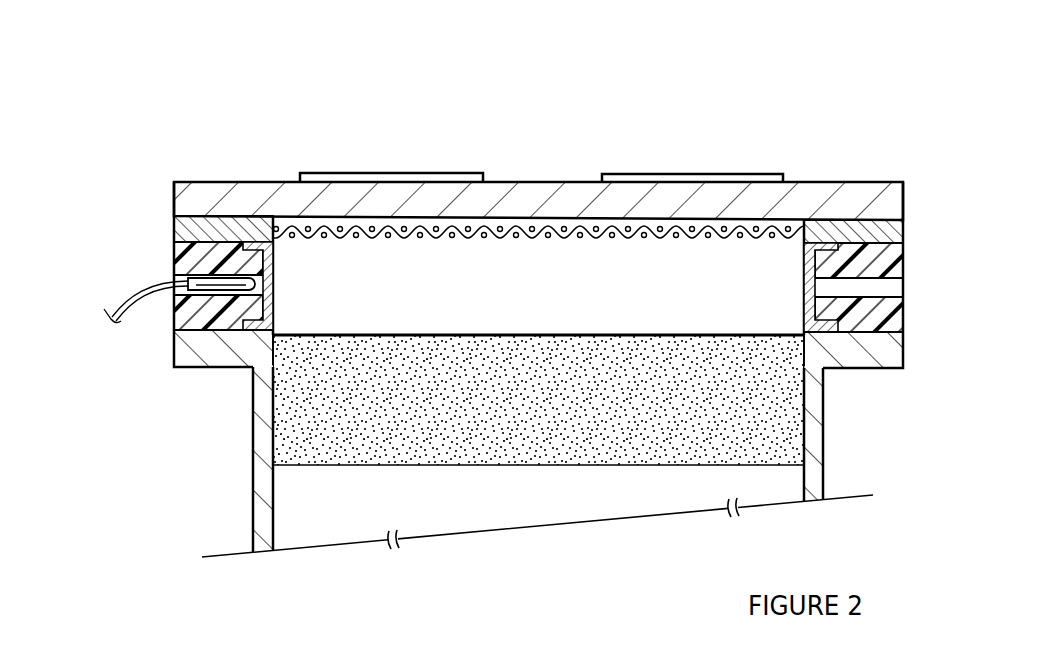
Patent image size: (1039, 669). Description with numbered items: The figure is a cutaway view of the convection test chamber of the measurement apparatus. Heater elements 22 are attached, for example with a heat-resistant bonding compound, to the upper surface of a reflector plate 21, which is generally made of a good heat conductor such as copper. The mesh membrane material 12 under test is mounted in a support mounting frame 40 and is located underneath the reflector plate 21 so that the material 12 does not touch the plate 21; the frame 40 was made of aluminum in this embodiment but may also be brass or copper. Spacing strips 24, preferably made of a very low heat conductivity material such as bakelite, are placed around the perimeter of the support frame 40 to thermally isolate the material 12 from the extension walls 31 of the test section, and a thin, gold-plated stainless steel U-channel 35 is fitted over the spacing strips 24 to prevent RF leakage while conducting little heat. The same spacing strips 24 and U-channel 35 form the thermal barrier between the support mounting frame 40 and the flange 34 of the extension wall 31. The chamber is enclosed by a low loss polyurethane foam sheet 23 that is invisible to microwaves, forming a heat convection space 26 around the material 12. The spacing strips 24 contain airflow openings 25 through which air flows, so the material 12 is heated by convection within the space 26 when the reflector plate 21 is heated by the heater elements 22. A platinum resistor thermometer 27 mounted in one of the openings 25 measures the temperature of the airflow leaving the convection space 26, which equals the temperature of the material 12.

The mesh membrane material 12 is at (612, 226).
The reflector plate 21 is at (887, 197).
The heater elements 22 is at (783, 125).
The low loss polyurethane foam sheet 23 is at (487, 447).
The spacing strips 24 is at (893, 268).
The airflow openings 25 is at (888, 287).
The heat convection space 26 is at (487, 272).
The platinum resistor thermometer 27 is at (220, 282).
The extension walls 31 is at (812, 393).
The flange 34 is at (878, 350).
The stainless steel U-channel 35 is at (807, 305).
The support mounting frame 40 is at (888, 237).